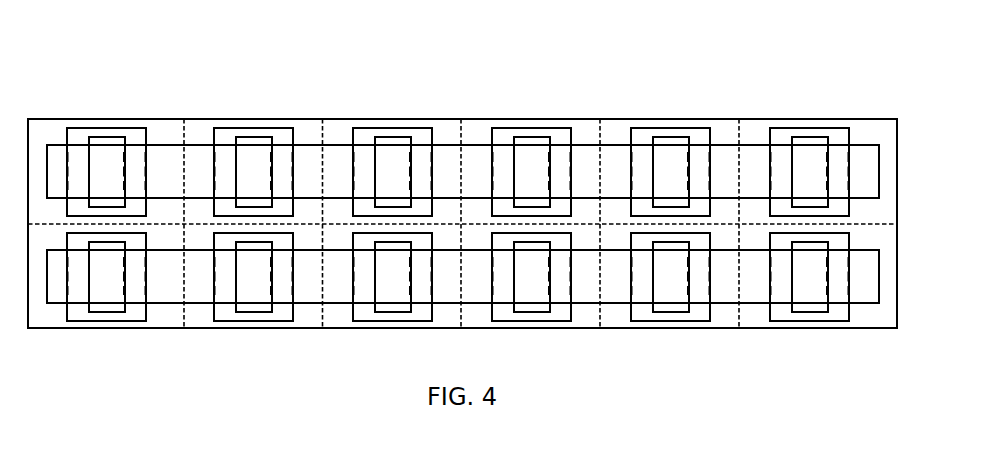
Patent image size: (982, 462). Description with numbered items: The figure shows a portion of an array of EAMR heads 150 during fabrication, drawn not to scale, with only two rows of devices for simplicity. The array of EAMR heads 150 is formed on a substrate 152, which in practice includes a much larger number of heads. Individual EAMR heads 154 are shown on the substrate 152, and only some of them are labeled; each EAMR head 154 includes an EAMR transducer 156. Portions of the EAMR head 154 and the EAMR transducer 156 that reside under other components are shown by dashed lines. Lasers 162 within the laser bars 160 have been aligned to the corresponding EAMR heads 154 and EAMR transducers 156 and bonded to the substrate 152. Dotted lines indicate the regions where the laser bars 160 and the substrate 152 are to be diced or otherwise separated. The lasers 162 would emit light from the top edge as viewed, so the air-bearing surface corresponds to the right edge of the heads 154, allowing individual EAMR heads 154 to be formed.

The array of EAMR heads 150 is at (486, 62).
The substrate 152 is at (196, 103).
The EAMR head 154 is at (352, 171).
The EAMR transducer 156 is at (525, 137).
The laser bar 160 is at (739, 255).
The laser 162 is at (132, 303).